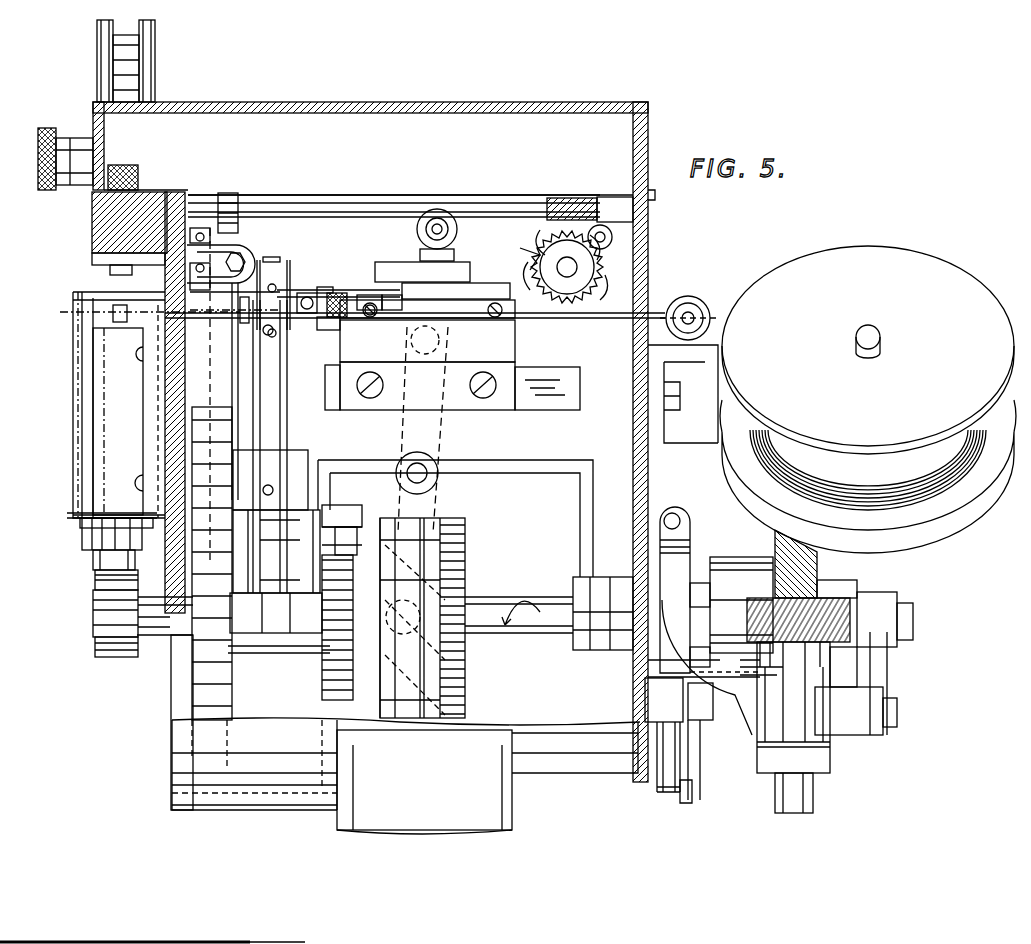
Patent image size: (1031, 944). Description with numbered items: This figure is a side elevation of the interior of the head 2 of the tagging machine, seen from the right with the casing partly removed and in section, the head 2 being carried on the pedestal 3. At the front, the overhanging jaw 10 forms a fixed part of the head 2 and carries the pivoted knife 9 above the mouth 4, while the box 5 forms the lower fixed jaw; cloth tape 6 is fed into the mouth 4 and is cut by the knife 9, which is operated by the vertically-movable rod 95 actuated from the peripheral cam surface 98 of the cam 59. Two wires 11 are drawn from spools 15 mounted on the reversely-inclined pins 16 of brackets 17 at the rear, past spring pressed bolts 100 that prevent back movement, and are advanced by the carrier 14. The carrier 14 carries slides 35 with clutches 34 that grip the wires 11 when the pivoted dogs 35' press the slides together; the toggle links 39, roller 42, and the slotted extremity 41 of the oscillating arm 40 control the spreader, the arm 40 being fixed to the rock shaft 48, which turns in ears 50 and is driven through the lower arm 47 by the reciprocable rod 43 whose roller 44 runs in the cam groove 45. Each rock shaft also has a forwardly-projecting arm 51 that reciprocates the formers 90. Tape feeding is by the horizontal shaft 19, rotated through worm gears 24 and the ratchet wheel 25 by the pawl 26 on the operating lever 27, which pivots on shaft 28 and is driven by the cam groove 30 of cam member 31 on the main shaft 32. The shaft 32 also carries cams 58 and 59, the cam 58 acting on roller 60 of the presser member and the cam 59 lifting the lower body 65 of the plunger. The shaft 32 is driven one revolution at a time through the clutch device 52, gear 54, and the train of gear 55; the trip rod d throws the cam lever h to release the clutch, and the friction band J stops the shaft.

The overhanging jaw 10 is at (92, 232).
The cloth tape 6 is at (108, 268).
The mouth 4 is at (110, 292).
The formers 90 is at (113, 315).
The vertically-movable rod 95 is at (201, 228).
The pivoted knife 9 is at (221, 287).
The forwardly-projecting arm 51 is at (207, 380).
The rock shaft 48 is at (275, 257).
The pivoted dogs 35' is at (318, 283).
The slides 35 is at (336, 279).
The oscillating arm 40 is at (370, 295).
The slotted extremity 41 is at (398, 295).
The horizontal shaft 19 is at (362, 208).
The pawl 26 is at (480, 225).
The operating lever 27 is at (418, 250).
The roller 42 is at (452, 256).
The worm gears 24 is at (568, 205).
The head 2 is at (636, 242).
The ratchet wheel 25 is at (592, 292).
The toggle links 39 is at (470, 285).
The carrier 14 is at (515, 313).
The wires 11 is at (580, 318).
The clutches 34 is at (452, 365).
The box 5 is at (73, 352).
The ears 50 is at (322, 431).
The lower arm 47 is at (279, 551).
The shaft 28 is at (425, 470).
The reciprocable rod 43 is at (330, 508).
The roller 44 is at (348, 530).
The cam groove 45 is at (355, 697).
The cam groove 30 is at (412, 611).
The cam member 31 is at (470, 537).
The main shaft 32 is at (490, 590).
The brackets 17 is at (80, 526).
The lower body 65 is at (92, 543).
The roller 60 is at (100, 563).
The cam 58 is at (108, 658).
The cam 59 is at (192, 702).
The peripheral cam surface 98 is at (225, 697).
The pedestal 3 is at (512, 798).
The spring pressed bolts 100 is at (695, 313).
The friction band J is at (690, 550).
The gear 54 is at (820, 575).
The train of gear 55 is at (850, 612).
The clutch device 52 is at (711, 670).
The cam lever h is at (708, 706).
The trip rod d is at (673, 752).
The spools 15 is at (868, 250).
The reversely-inclined pins 16 is at (880, 339).